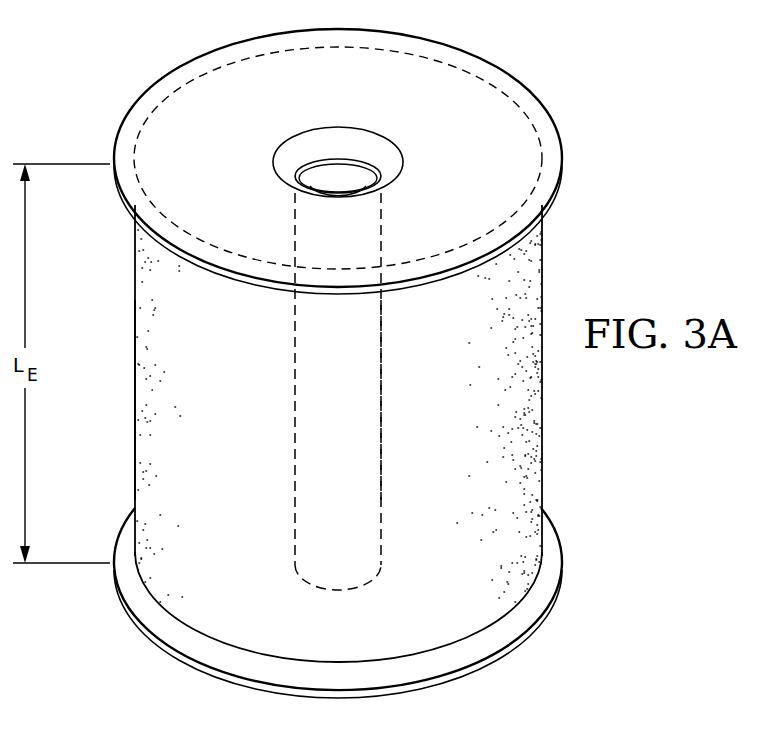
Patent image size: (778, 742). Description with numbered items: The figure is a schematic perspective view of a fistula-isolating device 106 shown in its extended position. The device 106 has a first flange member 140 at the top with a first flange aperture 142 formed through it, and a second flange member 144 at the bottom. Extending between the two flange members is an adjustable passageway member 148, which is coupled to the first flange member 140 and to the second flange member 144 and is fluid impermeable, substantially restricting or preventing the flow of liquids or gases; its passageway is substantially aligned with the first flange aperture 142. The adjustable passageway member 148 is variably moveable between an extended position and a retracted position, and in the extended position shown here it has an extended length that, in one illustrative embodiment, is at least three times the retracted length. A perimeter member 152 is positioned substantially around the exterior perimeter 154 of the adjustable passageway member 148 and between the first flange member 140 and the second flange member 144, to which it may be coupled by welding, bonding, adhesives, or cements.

The fistula-isolating device 106 is at (545, 443).
The first flange member 140 is at (521, 93).
The first flange aperture 142 is at (322, 160).
The second flange member 144 is at (513, 650).
The adjustable passageway member 148 is at (382, 353).
The perimeter member 152 is at (136, 433).
The exterior perimeter 154 is at (381, 440).